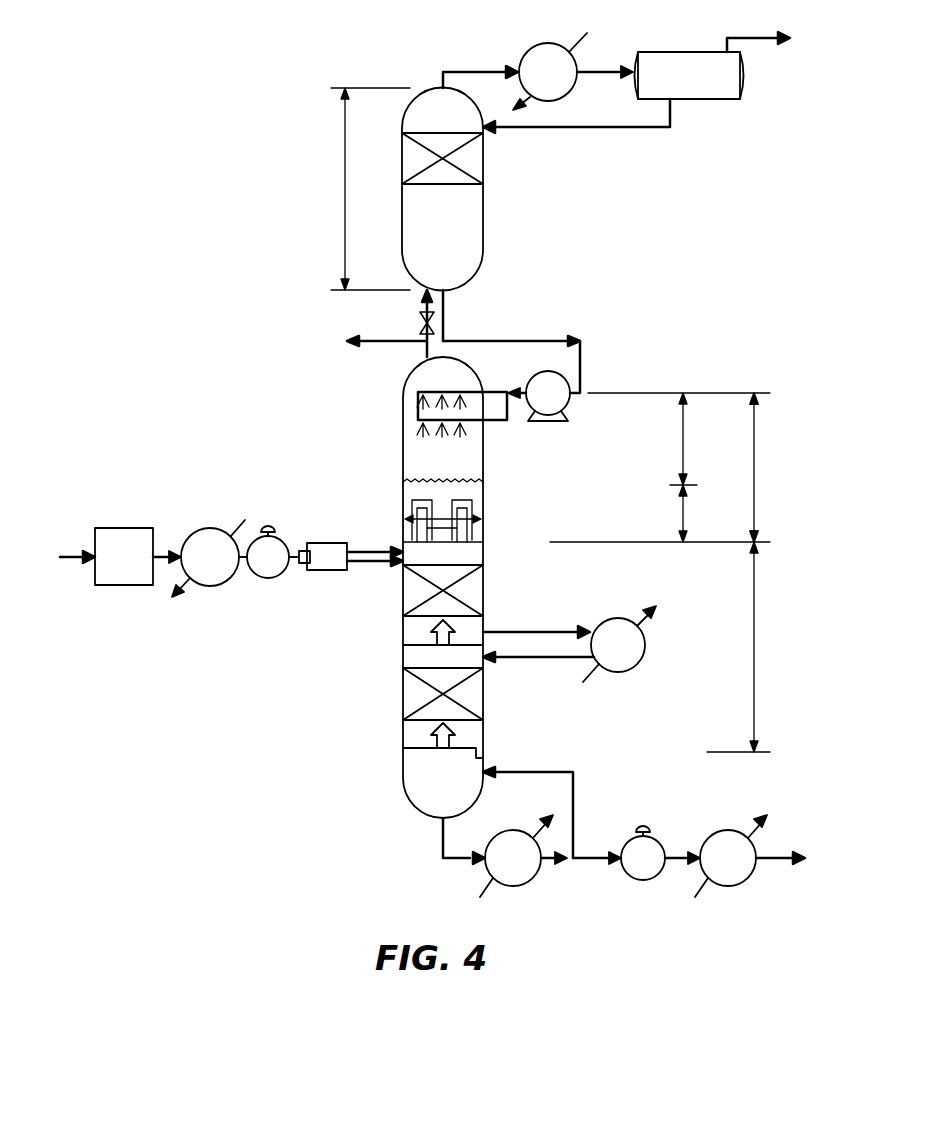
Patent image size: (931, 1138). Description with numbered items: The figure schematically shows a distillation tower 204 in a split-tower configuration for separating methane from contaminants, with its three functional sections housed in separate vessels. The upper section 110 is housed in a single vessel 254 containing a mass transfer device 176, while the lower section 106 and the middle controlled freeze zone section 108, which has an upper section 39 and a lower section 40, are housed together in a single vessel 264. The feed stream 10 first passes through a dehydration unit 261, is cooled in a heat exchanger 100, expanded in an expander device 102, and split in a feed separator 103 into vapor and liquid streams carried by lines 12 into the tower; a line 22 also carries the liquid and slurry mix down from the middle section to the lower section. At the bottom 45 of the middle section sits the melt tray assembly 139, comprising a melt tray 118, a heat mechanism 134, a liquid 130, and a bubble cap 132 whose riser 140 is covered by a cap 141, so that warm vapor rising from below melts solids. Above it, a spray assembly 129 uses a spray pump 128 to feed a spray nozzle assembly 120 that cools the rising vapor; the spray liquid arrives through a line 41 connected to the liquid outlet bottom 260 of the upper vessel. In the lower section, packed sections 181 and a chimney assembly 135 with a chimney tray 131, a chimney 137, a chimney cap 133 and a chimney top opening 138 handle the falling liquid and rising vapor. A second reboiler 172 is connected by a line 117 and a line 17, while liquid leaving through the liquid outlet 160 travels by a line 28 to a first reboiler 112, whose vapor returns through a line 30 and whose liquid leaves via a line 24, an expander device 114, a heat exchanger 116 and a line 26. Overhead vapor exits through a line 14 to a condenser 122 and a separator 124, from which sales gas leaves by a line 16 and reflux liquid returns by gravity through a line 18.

The distillation tower 204 is at (220, 55).
The feed stream 10 is at (72, 555).
The dehydration unit 261 is at (132, 528).
The heat exchanger 100 is at (220, 528).
The expander device 102 is at (262, 578).
The feed separator 103 is at (303, 564).
The lines 12 is at (331, 543).
The line 22 is at (398, 549).
The heat mechanism 134 is at (406, 519).
The packed section 181 is at (418, 563).
The chimney top opening 138 is at (432, 632).
The chimney assembly 135 is at (358, 651).
The chimney 137 is at (405, 638).
The chimney tray 131 is at (411, 647).
The cap 141 is at (420, 500).
The melt tray assembly 139 is at (480, 488).
The bubble cap 132 is at (473, 501).
The liquid 130 is at (490, 517).
The riser 140 is at (487, 536).
The melt tray 118 is at (470, 541).
The bottom 45 is at (447, 545).
The chimney cap 133 is at (458, 628).
The line 117 is at (538, 630).
The second reboiler 172 is at (632, 617).
The line 17 is at (557, 658).
The vessel 264 is at (485, 735).
The line 30 is at (545, 770).
The liquid outlet 160 is at (437, 819).
The line 28 is at (458, 860).
The first reboiler 112 is at (528, 832).
The line 24 is at (588, 857).
The expander device 114 is at (658, 879).
The heat exchanger 116 is at (743, 832).
The line 26 is at (768, 857).
The lower section 106 is at (756, 641).
The middle controlled freeze zone section 108 is at (756, 461).
The upper section 39 is at (685, 436).
The lower section 40 is at (685, 511).
The spray nozzle assembly 120 is at (418, 419).
The spray pump 128 is at (577, 409).
The spray assembly 129 is at (512, 381).
The line 41 is at (520, 340).
The liquid outlet bottom 260 is at (444, 294).
The vessel 254 is at (485, 226).
The mass transfer device 176 is at (420, 132).
The upper section 110 is at (344, 188).
The line 14 is at (478, 70).
The condenser 122 is at (553, 43).
The separator 124 is at (663, 52).
The line 16 is at (743, 36).
The line 18 is at (625, 128).